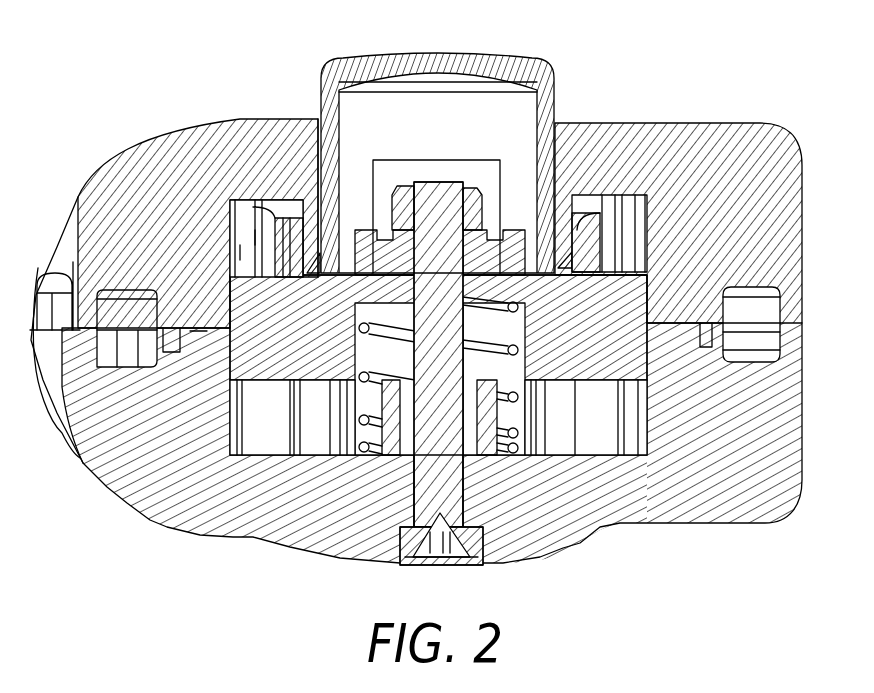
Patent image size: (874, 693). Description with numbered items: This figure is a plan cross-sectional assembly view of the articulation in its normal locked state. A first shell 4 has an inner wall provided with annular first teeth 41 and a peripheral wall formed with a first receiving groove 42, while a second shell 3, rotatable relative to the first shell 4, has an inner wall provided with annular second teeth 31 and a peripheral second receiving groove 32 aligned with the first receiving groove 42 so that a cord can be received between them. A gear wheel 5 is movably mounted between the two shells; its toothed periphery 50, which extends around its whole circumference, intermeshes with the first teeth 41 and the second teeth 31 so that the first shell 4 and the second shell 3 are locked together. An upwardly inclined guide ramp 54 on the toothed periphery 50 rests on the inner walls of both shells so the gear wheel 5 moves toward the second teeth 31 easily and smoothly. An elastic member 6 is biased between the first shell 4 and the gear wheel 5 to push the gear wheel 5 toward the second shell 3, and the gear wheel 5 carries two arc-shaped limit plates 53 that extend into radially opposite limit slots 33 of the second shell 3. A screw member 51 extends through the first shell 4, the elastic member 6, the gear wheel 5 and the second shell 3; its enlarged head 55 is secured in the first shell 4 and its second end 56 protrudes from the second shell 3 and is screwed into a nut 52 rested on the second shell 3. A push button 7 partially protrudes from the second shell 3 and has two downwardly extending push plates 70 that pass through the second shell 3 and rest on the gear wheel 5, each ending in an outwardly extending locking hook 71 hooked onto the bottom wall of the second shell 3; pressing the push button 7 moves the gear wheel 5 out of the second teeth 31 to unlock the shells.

The second shell 3 is at (750, 237).
The first shell 4 is at (188, 490).
The gear wheel 5 is at (283, 372).
The elastic member 6 is at (364, 448).
The push button 7 is at (486, 66).
The second teeth 31 is at (628, 220).
The second receiving groove 32 is at (757, 305).
The limit slots 33 is at (230, 208).
The first teeth 41 is at (607, 420).
The first receiving groove 42 is at (747, 341).
The toothed periphery 50 is at (633, 333).
The screw member 51 is at (427, 498).
The nut 52 is at (400, 200).
The limit plates 53 is at (250, 250).
The guide ramp 54 is at (715, 281).
The enlarged head 55 is at (470, 545).
The second end 56 is at (437, 200).
The push plates 70 is at (327, 180).
The locking hook 71 is at (598, 195).